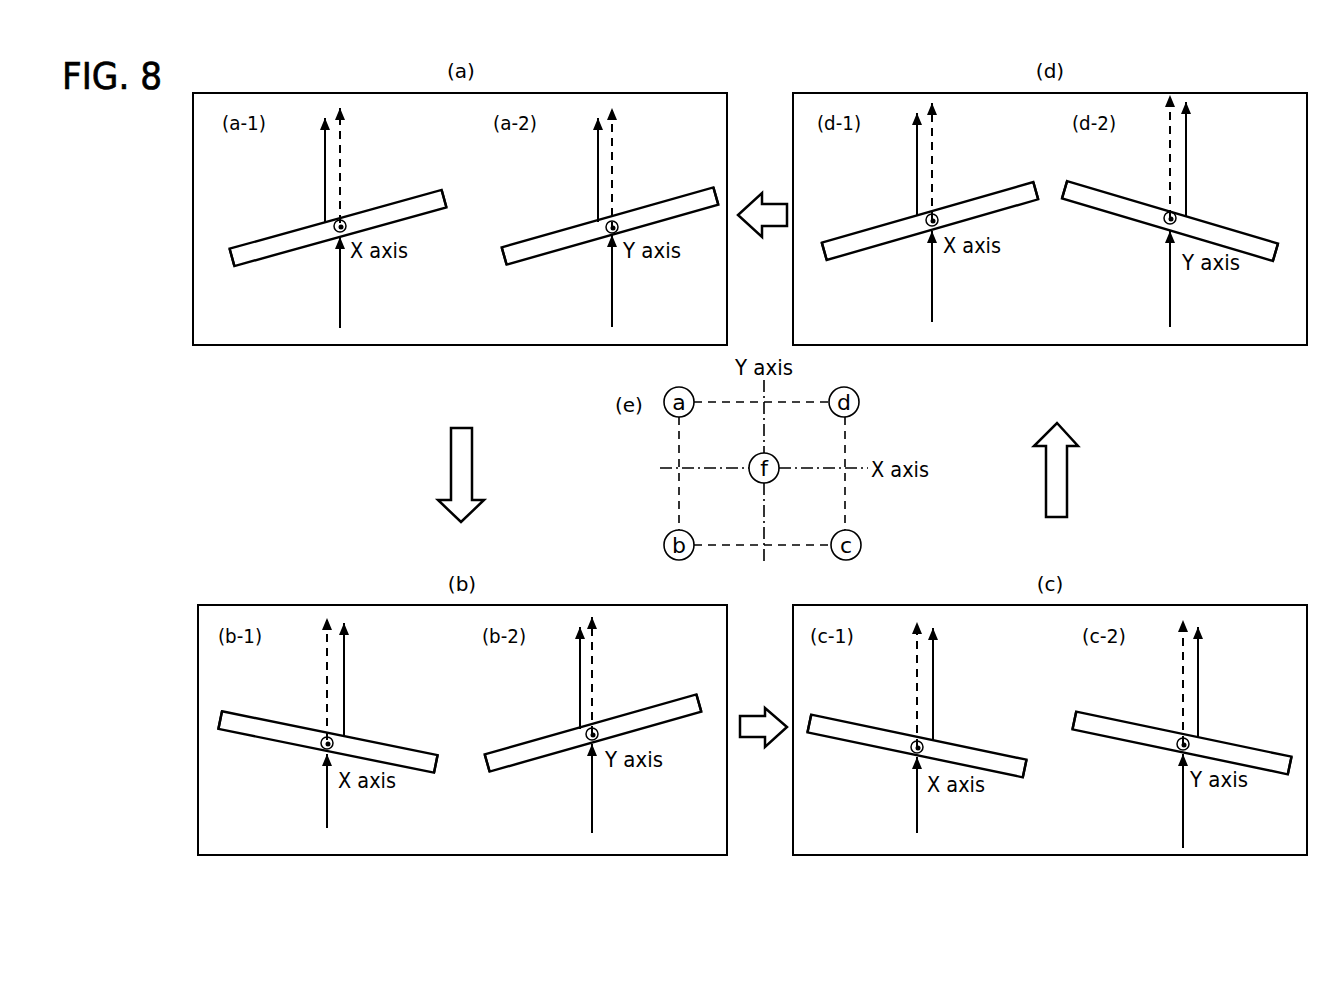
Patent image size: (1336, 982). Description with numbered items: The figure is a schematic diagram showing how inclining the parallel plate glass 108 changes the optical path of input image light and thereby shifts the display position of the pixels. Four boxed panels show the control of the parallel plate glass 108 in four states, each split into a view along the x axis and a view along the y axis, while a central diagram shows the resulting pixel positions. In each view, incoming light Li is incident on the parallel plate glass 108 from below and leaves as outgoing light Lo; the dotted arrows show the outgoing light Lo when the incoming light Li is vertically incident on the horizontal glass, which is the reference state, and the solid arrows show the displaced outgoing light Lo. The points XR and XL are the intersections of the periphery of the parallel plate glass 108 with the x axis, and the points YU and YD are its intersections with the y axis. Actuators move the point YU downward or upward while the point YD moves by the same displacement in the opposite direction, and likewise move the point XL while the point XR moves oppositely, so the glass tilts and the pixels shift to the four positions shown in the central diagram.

The parallel plate glass 108 is at (754, 512).
The point YU is at (532, 469).
The point YD is at (723, 464).
The point XL is at (795, 460).
The point XR is at (979, 466).
The outgoing light Lo is at (761, 421).
The incoming light Li is at (743, 540).